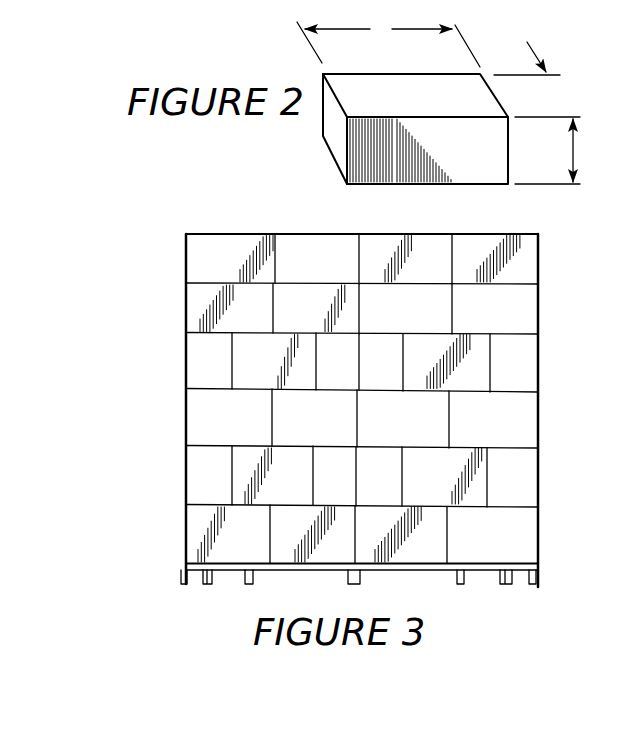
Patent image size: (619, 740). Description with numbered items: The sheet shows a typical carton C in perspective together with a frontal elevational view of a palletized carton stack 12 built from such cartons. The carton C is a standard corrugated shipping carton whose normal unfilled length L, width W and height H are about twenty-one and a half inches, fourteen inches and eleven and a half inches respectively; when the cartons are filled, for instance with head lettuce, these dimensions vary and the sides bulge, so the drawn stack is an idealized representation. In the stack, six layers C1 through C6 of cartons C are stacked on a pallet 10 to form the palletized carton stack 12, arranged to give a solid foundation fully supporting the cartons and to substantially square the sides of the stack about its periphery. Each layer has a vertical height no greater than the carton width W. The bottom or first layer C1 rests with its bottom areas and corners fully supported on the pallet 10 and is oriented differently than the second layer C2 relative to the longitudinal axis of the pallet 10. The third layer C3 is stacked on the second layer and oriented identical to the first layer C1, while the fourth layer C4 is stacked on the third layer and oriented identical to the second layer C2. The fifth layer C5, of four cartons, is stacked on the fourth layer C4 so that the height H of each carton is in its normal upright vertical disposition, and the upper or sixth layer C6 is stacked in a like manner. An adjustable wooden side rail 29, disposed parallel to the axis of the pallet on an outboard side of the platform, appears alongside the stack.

In FIG. 2, the carton C is at (340, 148).
In FIG. 2, the length L is at (388, 41).
In FIG. 2, the width W is at (531, 78).
In FIG. 2, the height H is at (548, 150).
In FIG. 3, the pallet 10 is at (176, 581).
In FIG. 3, the palletized carton stack 12 is at (174, 220).
In FIG. 3, the adjustable wooden side rail 29 is at (578, 410).
In FIG. 3, the first layer C1 is at (175, 545).
In FIG. 3, the second layer C2 is at (175, 488).
In FIG. 3, the third layer C3 is at (175, 432).
In FIG. 3, the fourth layer C4 is at (180, 370).
In FIG. 3, the fifth layer C5 is at (180, 316).
In FIG. 3, the sixth layer C6 is at (180, 267).